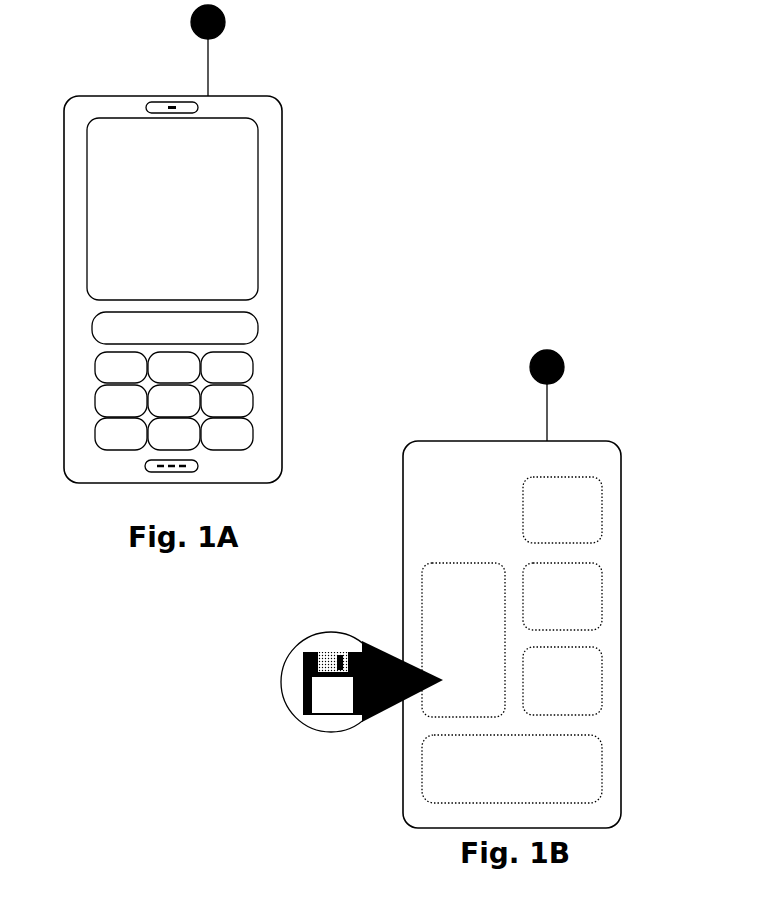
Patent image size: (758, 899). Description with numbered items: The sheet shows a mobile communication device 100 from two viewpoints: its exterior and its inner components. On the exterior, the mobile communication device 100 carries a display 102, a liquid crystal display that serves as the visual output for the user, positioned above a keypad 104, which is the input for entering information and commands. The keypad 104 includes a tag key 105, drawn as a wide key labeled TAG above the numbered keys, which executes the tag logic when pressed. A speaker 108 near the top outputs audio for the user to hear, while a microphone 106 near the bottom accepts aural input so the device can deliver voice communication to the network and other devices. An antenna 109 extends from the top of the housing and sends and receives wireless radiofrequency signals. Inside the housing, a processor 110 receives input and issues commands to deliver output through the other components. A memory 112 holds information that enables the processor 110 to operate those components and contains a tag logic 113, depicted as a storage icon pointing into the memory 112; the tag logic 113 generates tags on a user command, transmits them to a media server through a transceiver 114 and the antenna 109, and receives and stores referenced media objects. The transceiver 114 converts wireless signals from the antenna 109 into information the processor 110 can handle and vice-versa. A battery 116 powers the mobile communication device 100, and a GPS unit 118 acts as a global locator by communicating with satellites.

In FIG. 1A, the mobile communication device 100 is at (143, 96).
In FIG. 1B, the mobile communication device 100 is at (512, 441).
In FIG. 1A, the display 102 is at (258, 175).
In FIG. 1A, the keypad 104 is at (253, 398).
In FIG. 1A, the tag key 105 is at (258, 330).
In FIG. 1A, the microphone 106 is at (185, 472).
In FIG. 1A, the speaker 108 is at (197, 112).
In FIG. 1A, the antenna 109 is at (220, 35).
In FIG. 1B, the processor 110 is at (587, 560).
In FIG. 1B, the memory 112 is at (423, 610).
In FIG. 1B, the tag logic 113 is at (305, 653).
In FIG. 1B, the transceiver 114 is at (585, 647).
In FIG. 1B, the battery 116 is at (422, 765).
In FIG. 1B, the GPS unit 118 is at (585, 477).